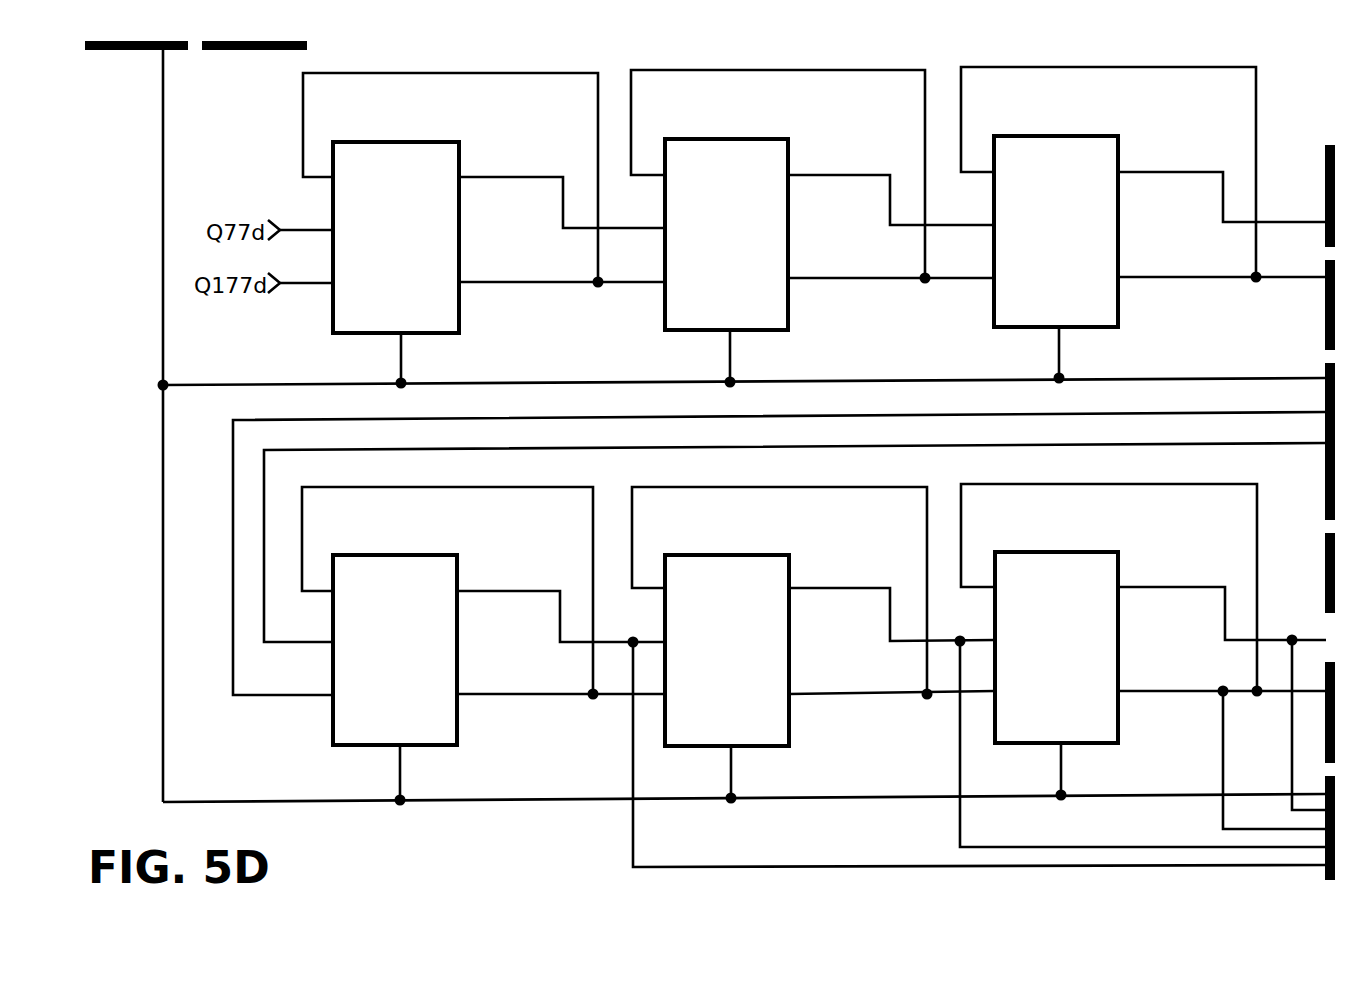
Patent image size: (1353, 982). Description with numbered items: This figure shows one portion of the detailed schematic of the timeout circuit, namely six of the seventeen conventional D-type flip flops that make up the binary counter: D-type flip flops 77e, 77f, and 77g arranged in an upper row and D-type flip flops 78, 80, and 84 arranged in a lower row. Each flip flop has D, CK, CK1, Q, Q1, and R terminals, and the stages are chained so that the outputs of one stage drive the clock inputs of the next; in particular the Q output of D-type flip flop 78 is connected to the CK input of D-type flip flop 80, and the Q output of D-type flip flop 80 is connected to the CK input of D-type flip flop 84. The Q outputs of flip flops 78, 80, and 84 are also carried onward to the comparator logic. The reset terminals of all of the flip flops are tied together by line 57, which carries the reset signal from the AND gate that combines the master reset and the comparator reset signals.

The line 57 is at (163, 114).
The D-type flip flop 77e is at (447, 142).
The D-type flip flop 77f is at (773, 139).
The D-type flip flop 77g is at (1102, 136).
The D-type flip flop 78 is at (442, 555).
The D-type flip flop 80 is at (777, 555).
The D-type flip flop 84 is at (1103, 552).